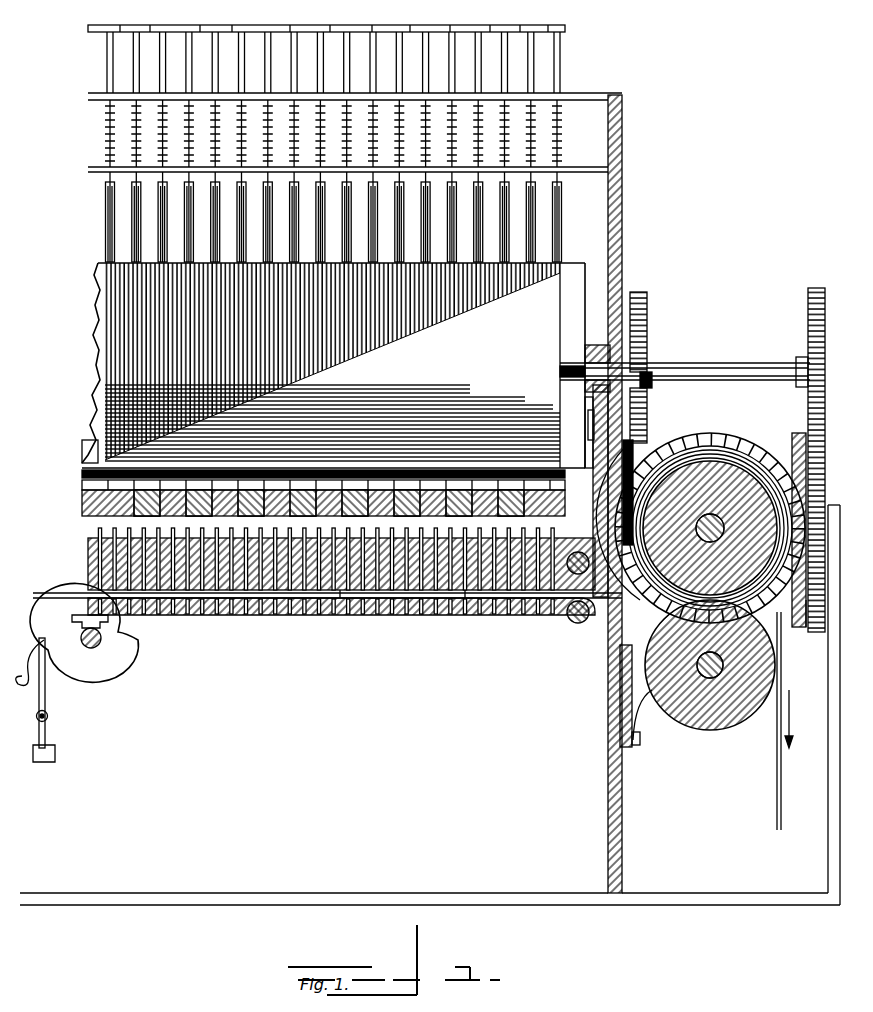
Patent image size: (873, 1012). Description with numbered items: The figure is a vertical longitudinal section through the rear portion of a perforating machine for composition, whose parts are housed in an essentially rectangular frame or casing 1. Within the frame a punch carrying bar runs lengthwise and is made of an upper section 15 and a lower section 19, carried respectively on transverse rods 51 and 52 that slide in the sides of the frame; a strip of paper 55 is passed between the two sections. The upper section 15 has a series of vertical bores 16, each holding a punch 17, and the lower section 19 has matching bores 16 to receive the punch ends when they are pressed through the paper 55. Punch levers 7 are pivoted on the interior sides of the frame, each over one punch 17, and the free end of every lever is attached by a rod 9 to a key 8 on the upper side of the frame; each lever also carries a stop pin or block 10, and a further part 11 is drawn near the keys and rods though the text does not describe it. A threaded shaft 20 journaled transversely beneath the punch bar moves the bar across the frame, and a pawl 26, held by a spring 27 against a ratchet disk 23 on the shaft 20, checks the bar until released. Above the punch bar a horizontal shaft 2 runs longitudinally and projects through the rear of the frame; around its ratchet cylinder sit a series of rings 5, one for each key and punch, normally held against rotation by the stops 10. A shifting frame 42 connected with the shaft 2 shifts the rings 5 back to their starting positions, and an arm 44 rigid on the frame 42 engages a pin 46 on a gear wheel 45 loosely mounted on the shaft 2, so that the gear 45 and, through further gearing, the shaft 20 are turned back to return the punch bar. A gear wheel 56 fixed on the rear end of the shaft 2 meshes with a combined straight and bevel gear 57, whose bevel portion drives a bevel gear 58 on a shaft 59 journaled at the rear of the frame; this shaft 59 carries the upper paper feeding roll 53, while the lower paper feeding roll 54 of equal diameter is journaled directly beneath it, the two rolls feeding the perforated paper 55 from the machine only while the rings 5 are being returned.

The frame or casing 1 is at (622, 233).
The horizontal shaft 2 is at (50, 722).
The rings 5 is at (112, 298).
The punch levers 7 is at (86, 512).
The key 8 is at (104, 33).
The rod 9 is at (106, 211).
The stop pin or block 10 is at (90, 486).
The comb 11 is at (106, 131).
The upper section 15 is at (92, 560).
The bores 16 is at (350, 605).
The punch 17 is at (142, 520).
The lower section 19 is at (468, 607).
The threaded shaft 20 is at (104, 637).
The ratchet disk 23 is at (100, 672).
The pawl 26 is at (46, 697).
The spring 27 is at (315, 639).
The shifting frame 42 is at (100, 443).
The arm 44 is at (652, 368).
The gear wheel 45 is at (648, 316).
The pin 46 is at (650, 434).
The transverse rod 51 is at (580, 552).
The transverse rod 52 is at (578, 624).
The upper paper feeding roll 53 is at (713, 514).
The lower paper feeding roll 54 is at (702, 725).
The strip of paper 55 is at (777, 790).
The gear wheel 56 is at (808, 328).
The combined straight and bevel gear 57 is at (815, 630).
The bevel gear 58 is at (737, 452).
The shaft 59 is at (796, 456).